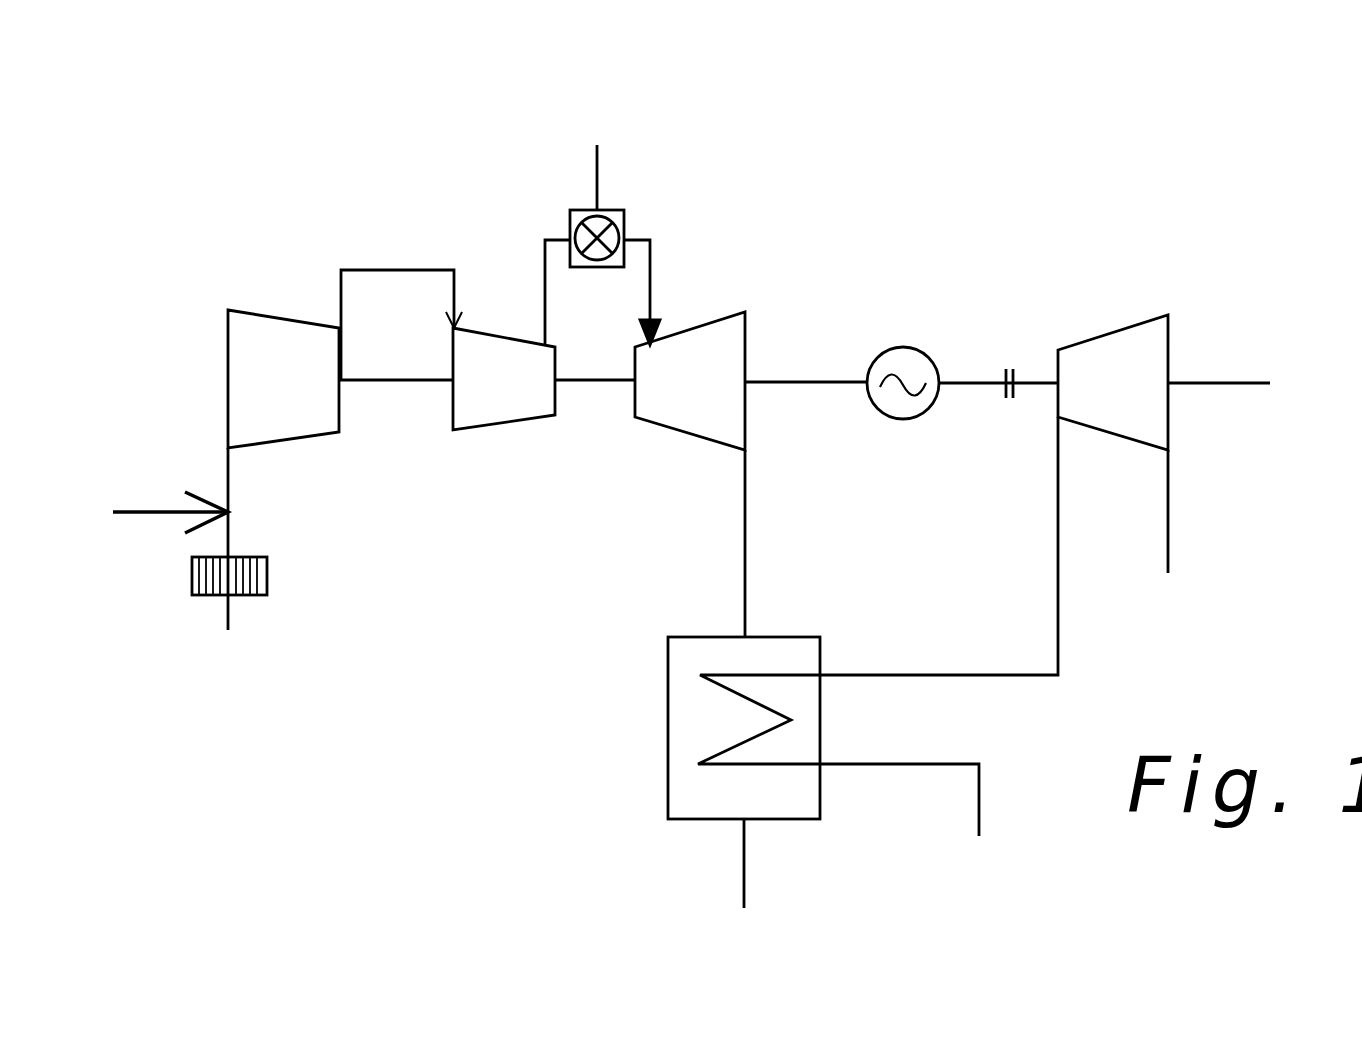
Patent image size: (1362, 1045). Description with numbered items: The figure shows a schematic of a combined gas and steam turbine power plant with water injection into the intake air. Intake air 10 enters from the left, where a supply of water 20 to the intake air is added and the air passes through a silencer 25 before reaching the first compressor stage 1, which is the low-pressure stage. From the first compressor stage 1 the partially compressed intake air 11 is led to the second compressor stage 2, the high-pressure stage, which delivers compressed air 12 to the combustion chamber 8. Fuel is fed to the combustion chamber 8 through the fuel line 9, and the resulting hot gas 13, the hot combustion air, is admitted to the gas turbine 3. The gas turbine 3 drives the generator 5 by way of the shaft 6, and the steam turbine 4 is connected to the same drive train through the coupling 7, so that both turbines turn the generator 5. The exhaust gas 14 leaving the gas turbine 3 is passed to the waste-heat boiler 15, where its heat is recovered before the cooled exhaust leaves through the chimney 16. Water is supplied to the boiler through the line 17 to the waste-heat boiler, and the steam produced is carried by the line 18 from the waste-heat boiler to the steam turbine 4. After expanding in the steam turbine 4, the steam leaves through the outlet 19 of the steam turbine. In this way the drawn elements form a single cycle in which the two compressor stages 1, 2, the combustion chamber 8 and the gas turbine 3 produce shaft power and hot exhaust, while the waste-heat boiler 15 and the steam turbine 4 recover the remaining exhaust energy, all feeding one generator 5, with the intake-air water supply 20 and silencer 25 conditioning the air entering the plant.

The first compressor stage 1 is at (304, 406).
The second compressor stage 2 is at (522, 405).
The gas turbine 3 is at (665, 416).
The steam turbine 4 is at (1085, 418).
The generator 5 is at (908, 347).
The shaft 6 is at (800, 382).
The coupling 7 is at (1010, 363).
The combustion chamber 8 is at (620, 210).
The fuel line 9 is at (595, 182).
The intake air 10 is at (225, 610).
The partially compressed intake air 11 is at (353, 268).
The compressed air 12 is at (547, 287).
The hot gas 13 is at (650, 263).
The exhaust gas 14 is at (746, 569).
The waste-heat boiler 15 is at (550, 837).
The chimney 16 is at (743, 869).
The line to the waste-heat boiler 17 is at (871, 766).
The line from the waste-heat boiler 18 is at (885, 673).
The outlet of the steam turbine 19 is at (1168, 505).
The supply of water to the intake air 20 is at (162, 510).
The silencer 25 is at (258, 572).